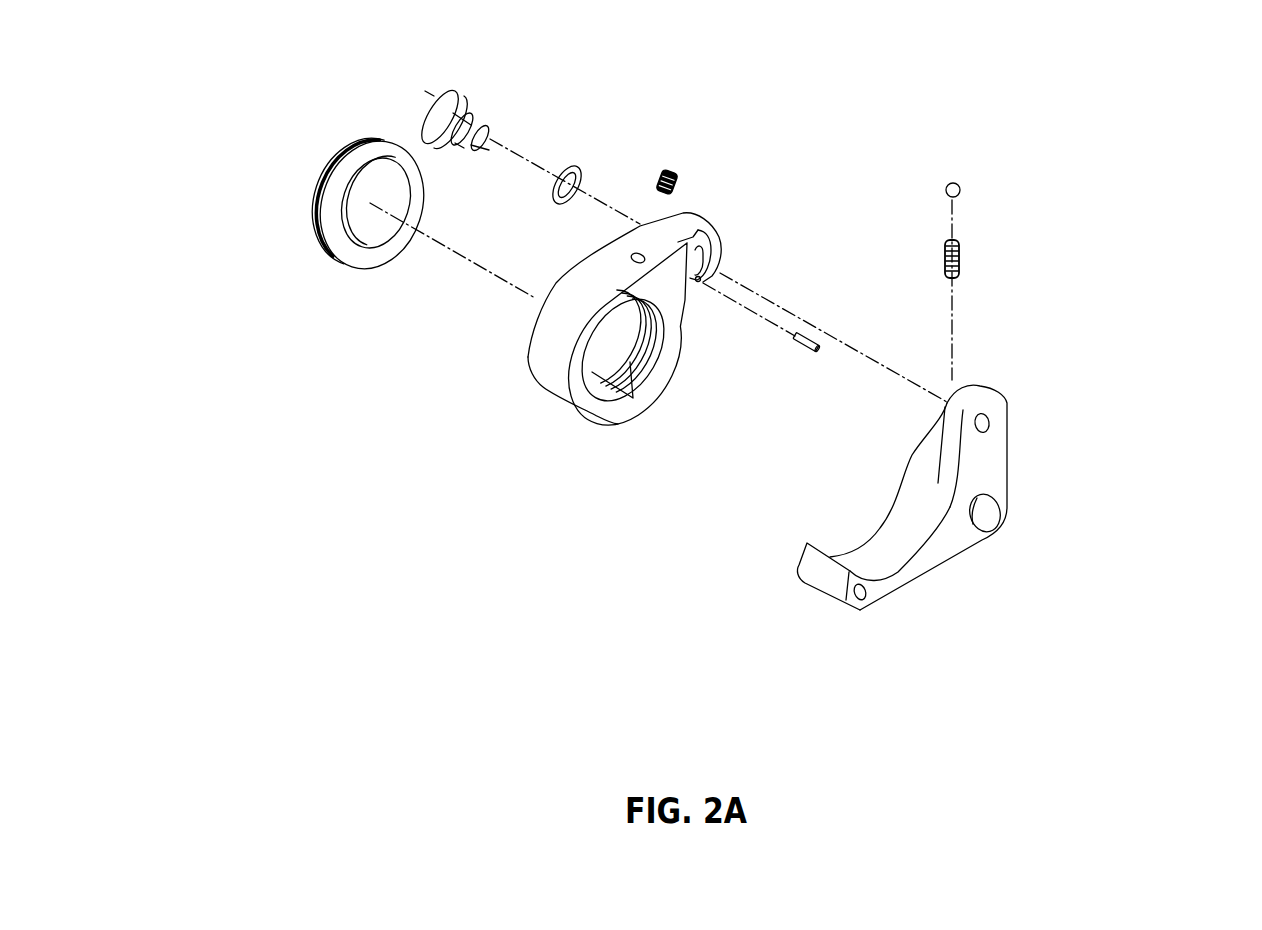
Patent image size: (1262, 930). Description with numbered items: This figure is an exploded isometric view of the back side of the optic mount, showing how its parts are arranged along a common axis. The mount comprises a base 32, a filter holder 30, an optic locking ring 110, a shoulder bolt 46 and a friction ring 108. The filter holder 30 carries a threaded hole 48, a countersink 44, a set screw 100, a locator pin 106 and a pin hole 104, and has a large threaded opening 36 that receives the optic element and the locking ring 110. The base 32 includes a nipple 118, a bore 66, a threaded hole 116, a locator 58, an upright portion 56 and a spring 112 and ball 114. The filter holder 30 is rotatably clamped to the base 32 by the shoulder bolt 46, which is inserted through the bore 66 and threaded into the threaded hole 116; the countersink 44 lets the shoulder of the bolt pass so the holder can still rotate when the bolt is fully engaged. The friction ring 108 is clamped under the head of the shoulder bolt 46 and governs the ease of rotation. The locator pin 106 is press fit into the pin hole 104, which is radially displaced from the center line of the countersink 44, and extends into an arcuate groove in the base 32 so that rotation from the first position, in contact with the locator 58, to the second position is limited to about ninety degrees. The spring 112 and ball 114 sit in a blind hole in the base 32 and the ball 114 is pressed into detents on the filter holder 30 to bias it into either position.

The filter holder 30 is at (599, 301).
The base 32 is at (904, 528).
The threaded bore 36 is at (628, 405).
The countersink 44 is at (685, 242).
The shoulder bolt 46 is at (425, 101).
The threaded hole 48 is at (643, 255).
The upright portion of bracket 56 is at (1012, 398).
The locator 58 is at (890, 547).
The bore 66 is at (985, 512).
The set screw 100 is at (677, 160).
The pin hole 104 is at (700, 276).
The locator pin 106 is at (790, 351).
The friction ring 108 is at (578, 158).
The optic locking ring 110 is at (320, 182).
The spring 112 is at (968, 262).
The ball 114 is at (967, 186).
The threaded hole 116 is at (985, 424).
The nipple 118 is at (857, 602).